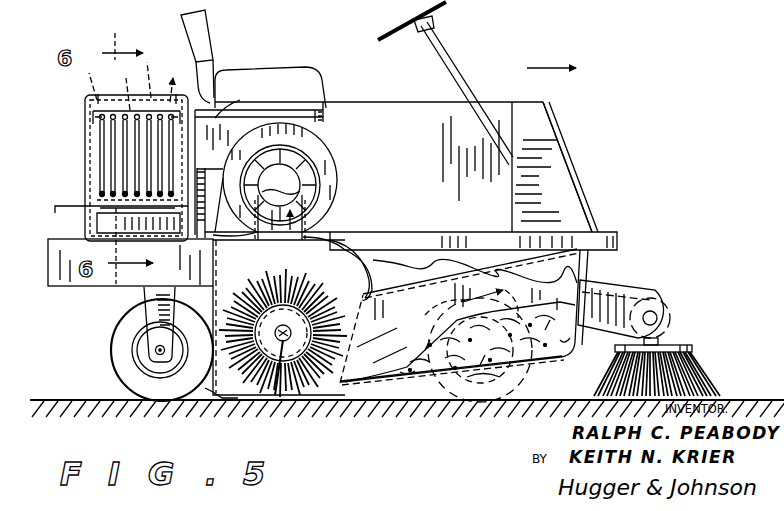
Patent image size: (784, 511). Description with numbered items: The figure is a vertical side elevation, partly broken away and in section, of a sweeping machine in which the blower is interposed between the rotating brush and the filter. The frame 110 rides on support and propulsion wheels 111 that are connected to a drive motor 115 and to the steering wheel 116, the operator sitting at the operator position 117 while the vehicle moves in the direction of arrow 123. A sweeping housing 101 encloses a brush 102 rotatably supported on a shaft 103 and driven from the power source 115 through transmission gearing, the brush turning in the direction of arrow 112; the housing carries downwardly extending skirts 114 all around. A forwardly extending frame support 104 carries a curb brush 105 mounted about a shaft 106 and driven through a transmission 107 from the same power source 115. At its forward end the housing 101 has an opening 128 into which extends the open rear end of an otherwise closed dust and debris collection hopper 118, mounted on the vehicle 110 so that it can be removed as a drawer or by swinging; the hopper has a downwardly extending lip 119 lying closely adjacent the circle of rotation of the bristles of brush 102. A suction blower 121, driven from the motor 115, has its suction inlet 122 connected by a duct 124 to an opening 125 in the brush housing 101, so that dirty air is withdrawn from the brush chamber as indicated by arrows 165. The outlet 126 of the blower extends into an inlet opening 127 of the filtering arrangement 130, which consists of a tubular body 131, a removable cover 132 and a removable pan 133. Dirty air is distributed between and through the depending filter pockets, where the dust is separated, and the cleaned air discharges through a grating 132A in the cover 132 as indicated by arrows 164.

The sweeping housing 101 is at (332, 237).
The brush 102 is at (292, 405).
The shaft 103 is at (265, 404).
The frame support 104 is at (625, 295).
The curb brush 105 is at (686, 338).
The shaft 106 is at (672, 340).
The transmission 107 is at (657, 312).
The frame 110 is at (600, 230).
The support and propulsion wheels 111 is at (125, 344).
The arrow 112 is at (249, 267).
The skirts 114 is at (222, 404).
The drive motor 115 is at (393, 127).
The steering wheel 116 is at (450, 60).
The operator position 117 is at (290, 80).
The dust and debris collection hopper 118 is at (393, 310).
The lip 119 is at (357, 402).
The suction blower 121 is at (325, 147).
The suction inlet 122 is at (300, 180).
The arrow 123 is at (545, 68).
The duct 124 is at (316, 237).
The opening 125 is at (295, 240).
The outlet 126 is at (200, 137).
The inlet opening 127 is at (100, 147).
The opening 128 is at (402, 264).
The filtering arrangement 130 is at (83, 158).
The tubular body 131 is at (88, 181).
The removable cover 132 is at (107, 94).
The grating 132A is at (110, 92).
The removable pan 133 is at (103, 221).
The arrows 164 is at (152, 82).
The arrows 165 is at (200, 240).